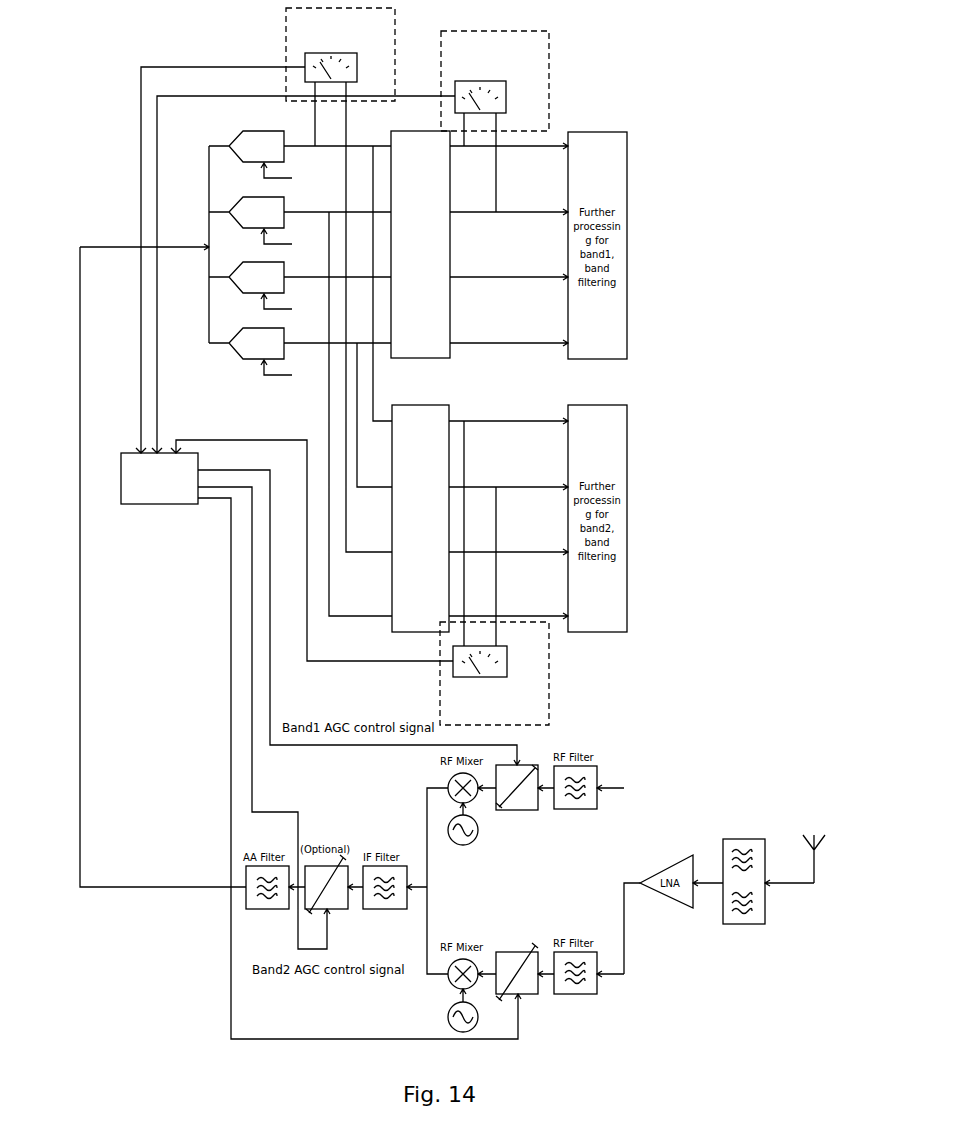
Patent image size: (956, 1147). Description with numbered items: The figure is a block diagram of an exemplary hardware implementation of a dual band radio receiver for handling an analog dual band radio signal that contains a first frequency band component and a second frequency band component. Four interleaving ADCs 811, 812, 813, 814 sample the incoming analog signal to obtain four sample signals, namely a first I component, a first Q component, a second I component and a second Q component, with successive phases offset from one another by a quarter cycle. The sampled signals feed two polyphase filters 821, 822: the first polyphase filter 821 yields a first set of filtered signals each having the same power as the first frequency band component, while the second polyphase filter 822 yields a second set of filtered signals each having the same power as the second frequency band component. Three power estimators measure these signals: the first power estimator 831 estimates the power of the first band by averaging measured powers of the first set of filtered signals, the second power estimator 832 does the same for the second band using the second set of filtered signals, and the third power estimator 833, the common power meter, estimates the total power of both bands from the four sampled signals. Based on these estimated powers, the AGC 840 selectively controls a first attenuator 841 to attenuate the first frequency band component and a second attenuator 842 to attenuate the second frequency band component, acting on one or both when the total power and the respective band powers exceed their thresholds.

The interleaving ADC 811 is at (258, 131).
The interleaving ADC 812 is at (258, 197).
The interleaving ADC 813 is at (258, 262).
The interleaving ADC 814 is at (258, 328).
The polyphase filter 821 is at (394, 131).
The polyphase filter 822 is at (396, 405).
The first power estimator 831 is at (506, 96).
The second power estimator 832 is at (507, 652).
The third power estimator 833 is at (357, 68).
The AGC 840 is at (153, 504).
The first attenuator 841 is at (517, 810).
The second attenuator 842 is at (523, 994).